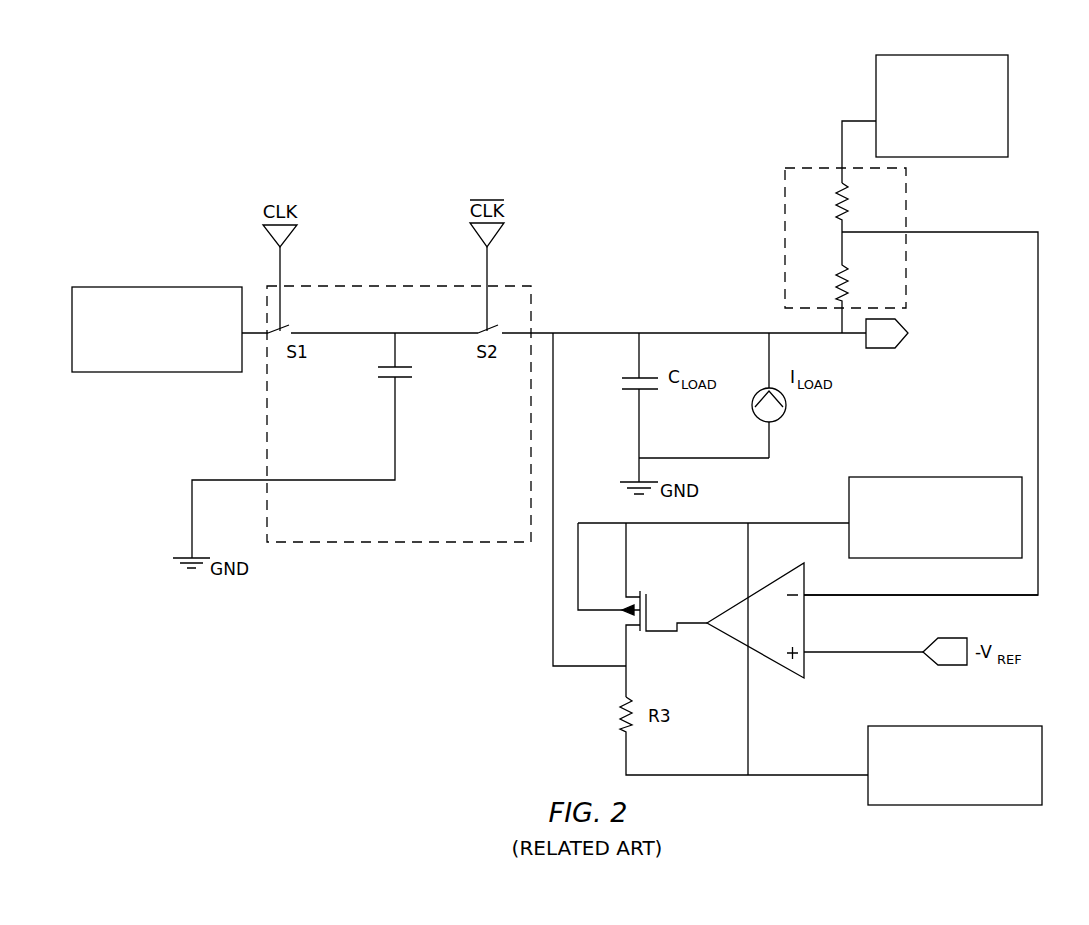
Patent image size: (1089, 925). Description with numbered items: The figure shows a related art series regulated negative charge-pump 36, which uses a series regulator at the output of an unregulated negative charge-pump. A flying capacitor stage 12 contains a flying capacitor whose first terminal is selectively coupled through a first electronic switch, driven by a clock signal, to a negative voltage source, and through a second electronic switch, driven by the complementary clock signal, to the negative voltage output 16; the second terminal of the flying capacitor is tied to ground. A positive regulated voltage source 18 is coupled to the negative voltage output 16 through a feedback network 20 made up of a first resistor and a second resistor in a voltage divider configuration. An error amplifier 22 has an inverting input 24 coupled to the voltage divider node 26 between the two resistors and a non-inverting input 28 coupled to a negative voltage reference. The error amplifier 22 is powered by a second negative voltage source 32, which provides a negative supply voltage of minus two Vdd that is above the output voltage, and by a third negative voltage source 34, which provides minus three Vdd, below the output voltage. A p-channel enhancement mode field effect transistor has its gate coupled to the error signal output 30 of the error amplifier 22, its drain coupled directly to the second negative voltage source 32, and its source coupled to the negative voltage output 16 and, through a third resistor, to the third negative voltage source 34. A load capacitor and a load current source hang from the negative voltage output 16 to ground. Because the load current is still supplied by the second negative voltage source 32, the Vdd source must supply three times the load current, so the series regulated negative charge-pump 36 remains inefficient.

The flying capacitor stage 12 is at (512, 525).
The negative voltage output 16 is at (880, 348).
The positive regulated voltage source 18 is at (933, 150).
The feedback network 20 is at (808, 168).
The error amplifier 22 is at (752, 632).
The inverting input 24 is at (848, 596).
The voltage divider node 26 is at (850, 233).
The non-inverting input 28 is at (852, 653).
The error signal output 30 is at (683, 632).
The second negative voltage source 32 is at (167, 364).
The third negative voltage source 34 is at (946, 799).
The series regulated negative charge-pump 36 is at (593, 140).